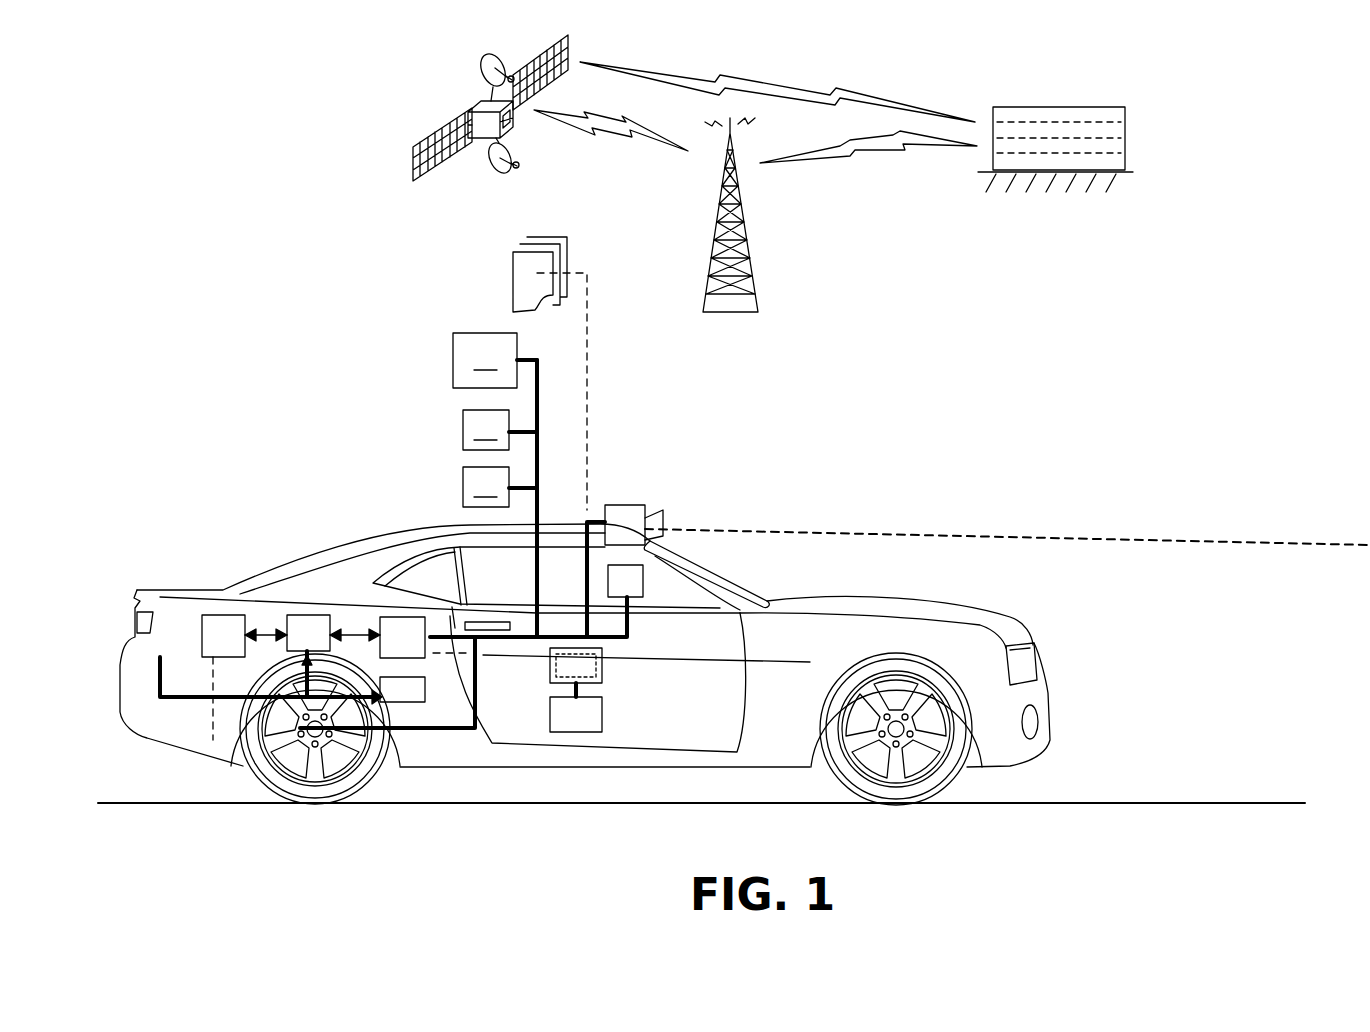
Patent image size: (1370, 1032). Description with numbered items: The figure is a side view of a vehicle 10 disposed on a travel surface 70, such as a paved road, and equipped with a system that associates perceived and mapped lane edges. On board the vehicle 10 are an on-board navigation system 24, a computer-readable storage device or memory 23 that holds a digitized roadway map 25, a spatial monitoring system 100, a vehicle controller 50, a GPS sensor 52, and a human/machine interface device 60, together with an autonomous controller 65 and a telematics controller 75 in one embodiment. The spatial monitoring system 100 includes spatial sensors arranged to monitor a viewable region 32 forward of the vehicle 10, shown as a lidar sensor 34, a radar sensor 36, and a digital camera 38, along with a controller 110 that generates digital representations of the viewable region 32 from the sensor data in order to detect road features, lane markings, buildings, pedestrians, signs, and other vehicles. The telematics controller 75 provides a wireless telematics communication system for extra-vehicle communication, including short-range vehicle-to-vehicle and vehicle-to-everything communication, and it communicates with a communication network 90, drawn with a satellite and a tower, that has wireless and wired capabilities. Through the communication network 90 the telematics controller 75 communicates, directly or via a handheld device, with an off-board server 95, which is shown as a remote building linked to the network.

The vehicle 10 is at (940, 597).
The computer-readable storage device or media (memory) 23 is at (513, 275).
The on-board navigation system 24 is at (645, 582).
The digitized roadway map 25 is at (706, 568).
The viewable region 32 is at (780, 528).
The lidar sensor 34 is at (495, 360).
The radar sensor 36 is at (500, 430).
The digital camera 38 is at (500, 487).
The vehicle controller 50 is at (308, 615).
The global positioning system (GPS) sensor 52 is at (602, 712).
The human/machine interface (HMI) device 60 is at (602, 668).
The autonomous controller 65 is at (405, 702).
The travel surface 70 is at (1115, 800).
The telematics controller 75 is at (222, 615).
The communication network 90 is at (600, 193).
The off-board server 95 is at (1128, 131).
The spatial monitoring system 100 is at (645, 505).
The controller 110 is at (403, 617).